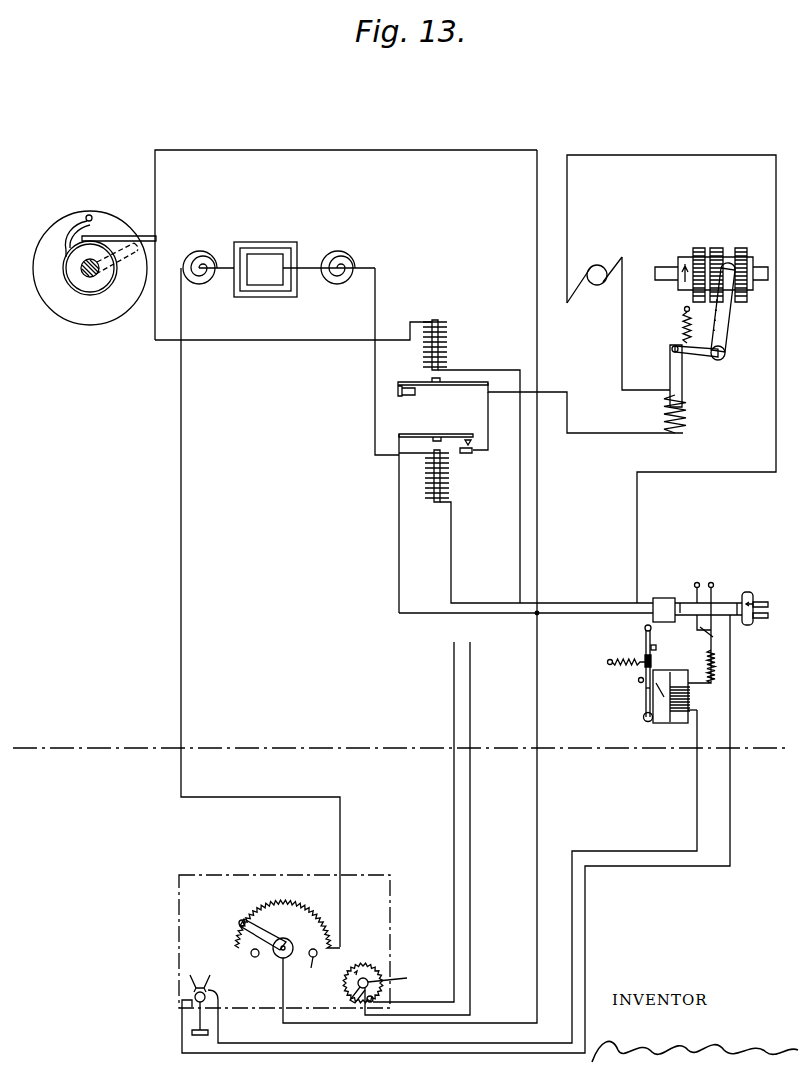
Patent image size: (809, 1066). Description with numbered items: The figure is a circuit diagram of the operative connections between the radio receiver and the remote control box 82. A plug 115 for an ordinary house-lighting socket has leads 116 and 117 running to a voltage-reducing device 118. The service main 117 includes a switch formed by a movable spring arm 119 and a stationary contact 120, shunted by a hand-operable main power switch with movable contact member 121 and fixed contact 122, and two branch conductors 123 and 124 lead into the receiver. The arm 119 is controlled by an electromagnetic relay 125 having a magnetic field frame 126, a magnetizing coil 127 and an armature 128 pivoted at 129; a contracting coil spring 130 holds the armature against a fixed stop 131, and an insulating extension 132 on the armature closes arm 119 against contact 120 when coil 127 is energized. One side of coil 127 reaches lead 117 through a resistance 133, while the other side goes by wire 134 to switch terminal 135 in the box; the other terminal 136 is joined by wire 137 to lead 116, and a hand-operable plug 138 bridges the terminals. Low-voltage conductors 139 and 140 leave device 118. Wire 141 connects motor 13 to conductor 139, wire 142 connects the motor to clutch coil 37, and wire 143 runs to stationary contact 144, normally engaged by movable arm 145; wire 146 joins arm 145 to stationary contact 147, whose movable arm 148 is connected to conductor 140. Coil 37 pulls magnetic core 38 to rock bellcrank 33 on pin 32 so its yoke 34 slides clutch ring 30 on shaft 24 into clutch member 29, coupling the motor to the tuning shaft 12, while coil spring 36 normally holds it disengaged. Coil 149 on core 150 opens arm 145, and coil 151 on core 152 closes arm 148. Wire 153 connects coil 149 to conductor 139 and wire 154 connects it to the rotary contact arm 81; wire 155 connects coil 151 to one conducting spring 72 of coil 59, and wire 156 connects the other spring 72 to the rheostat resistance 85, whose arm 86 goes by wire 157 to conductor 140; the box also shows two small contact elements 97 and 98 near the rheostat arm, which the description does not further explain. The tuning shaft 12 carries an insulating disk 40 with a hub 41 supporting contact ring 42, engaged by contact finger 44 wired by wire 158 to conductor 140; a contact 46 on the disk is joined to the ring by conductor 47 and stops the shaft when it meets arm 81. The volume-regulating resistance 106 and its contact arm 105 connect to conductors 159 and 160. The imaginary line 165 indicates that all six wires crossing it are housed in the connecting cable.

The tuning shaft 12 is at (86, 274).
The motor 13 is at (592, 283).
The shaft 24 is at (761, 266).
The clutch member 29 is at (698, 247).
The clutch ring 30 is at (716, 247).
The pin 32 is at (722, 359).
The bellcrank 33 is at (728, 350).
The yoke 34 is at (722, 315).
The contracting coil spring 36 is at (681, 323).
The clutch coil 37 is at (688, 408).
The magnetic core 38 is at (669, 362).
The insulating disk 40 is at (45, 260).
The hub 41 is at (73, 262).
The contact ring 42 is at (64, 255).
The contact finger 44 is at (144, 236).
The contact 46 is at (90, 215).
The conductor 47 is at (75, 228).
The coil 59 is at (264, 242).
The conducting springs 72 is at (335, 250).
The rotary contact arm 81 is at (134, 256).
The remote control box 82 is at (178, 888).
The rheostat resistance 85 is at (260, 905).
The rheostat arm 86 is at (264, 930).
The contact 97 is at (250, 954).
The contact 98 is at (314, 967).
The contact arm 105 is at (401, 980).
The volume-regulating resistance 106 is at (366, 966).
The plug 115 is at (754, 596).
The lead 116 is at (737, 602).
The lead 117 is at (746, 624).
The voltage-reducing device 118 is at (661, 598).
The movable arm 119 is at (646, 637).
The stationary contact 120 is at (657, 649).
The movable contact member 121 is at (714, 634).
The fixed contact 122 is at (699, 629).
The branch conductor 123 is at (714, 586).
The branch conductor 124 is at (697, 582).
The electromagnetic relay 125 is at (660, 700).
The magnetic field frame 126 is at (666, 723).
The magnetizing coil 127 is at (690, 695).
The armature 128 is at (646, 689).
The pivot 129 is at (647, 722).
The contracting coil spring 130 is at (607, 660).
The fixed stop 131 is at (638, 679).
The insulating extension 132 is at (644, 660).
The resistance 133 is at (716, 677).
The wire 134 is at (641, 851).
The switch terminal 135 is at (222, 1002).
The switch terminal 136 is at (188, 988).
The wire 137 is at (649, 867).
The hand-operable plug 138 is at (192, 1040).
The conductor 139 is at (586, 598).
The conductor 140 is at (487, 614).
The wire 141 is at (636, 483).
The wire 142 is at (621, 345).
The wire 143 is at (612, 432).
The stationary switch contact 144 is at (410, 395).
The movable contact arm 145 is at (420, 381).
The wire 146 is at (491, 434).
The stationary contact 147 is at (466, 453).
The movable contact arm 148 is at (426, 433).
The coil 149 is at (448, 344).
The magnetic core 150 is at (441, 319).
The coil 151 is at (450, 477).
The magnetic core 152 is at (437, 503).
The wire 153 is at (519, 517).
The wire 154 is at (282, 341).
The wire 155 is at (376, 290).
The wire 156 is at (182, 600).
The wire 157 is at (536, 893).
The wire 158 is at (437, 155).
The conductor 159 is at (468, 835).
The conductor 160 is at (453, 810).
The imaginary line 165 is at (92, 748).